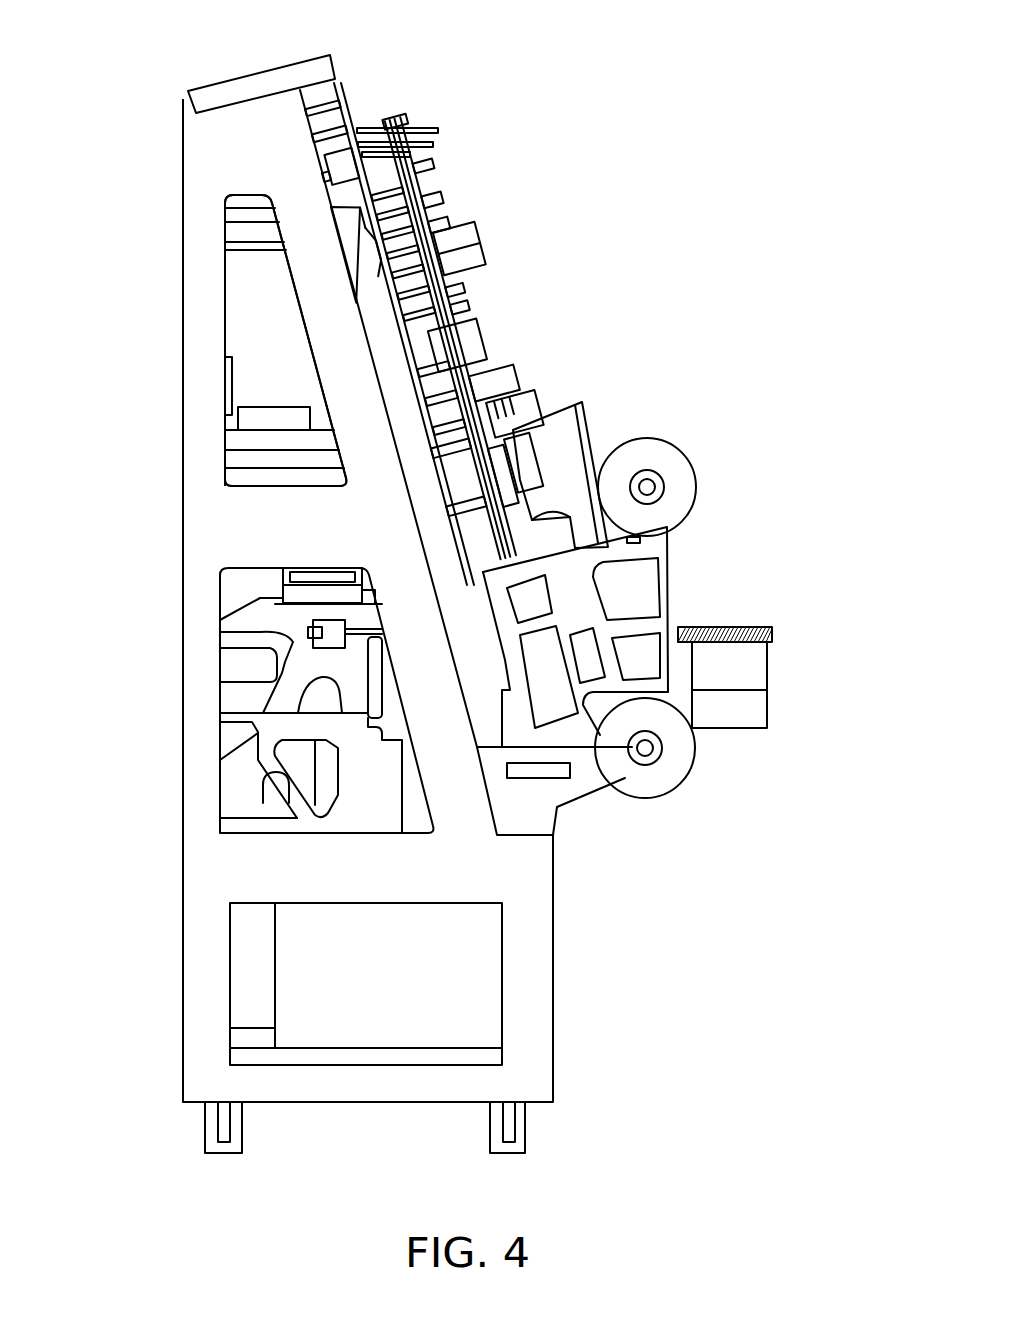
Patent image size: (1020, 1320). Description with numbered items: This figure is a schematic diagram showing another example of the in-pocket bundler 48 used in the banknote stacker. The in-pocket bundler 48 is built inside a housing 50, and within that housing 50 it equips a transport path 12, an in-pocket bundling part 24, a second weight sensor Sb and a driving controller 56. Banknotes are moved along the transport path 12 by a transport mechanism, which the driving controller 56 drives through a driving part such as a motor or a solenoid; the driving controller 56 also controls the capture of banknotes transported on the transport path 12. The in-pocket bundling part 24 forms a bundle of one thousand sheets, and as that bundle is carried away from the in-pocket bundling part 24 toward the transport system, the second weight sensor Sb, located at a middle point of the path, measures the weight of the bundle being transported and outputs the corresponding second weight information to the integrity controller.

The in-pocket bundler 48 is at (590, 85).
The transport path 12 is at (476, 245).
The housing 50 is at (205, 291).
The driving controller 56 is at (266, 331).
The in-pocket bundling part 24 is at (573, 594).
The second weight sensor Sb is at (730, 643).